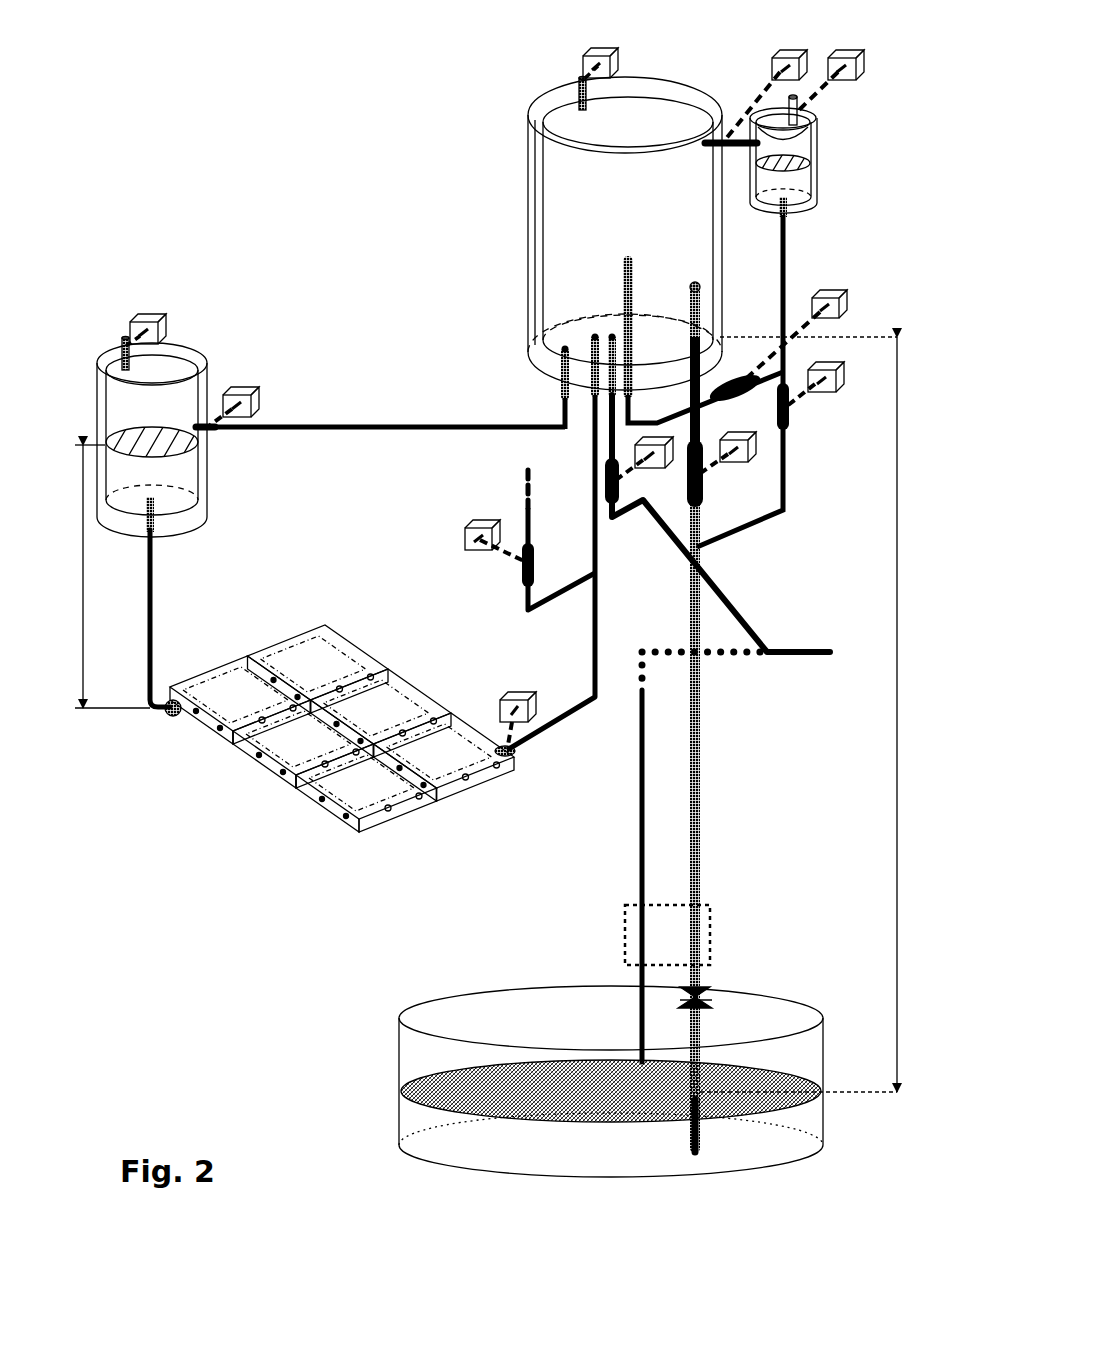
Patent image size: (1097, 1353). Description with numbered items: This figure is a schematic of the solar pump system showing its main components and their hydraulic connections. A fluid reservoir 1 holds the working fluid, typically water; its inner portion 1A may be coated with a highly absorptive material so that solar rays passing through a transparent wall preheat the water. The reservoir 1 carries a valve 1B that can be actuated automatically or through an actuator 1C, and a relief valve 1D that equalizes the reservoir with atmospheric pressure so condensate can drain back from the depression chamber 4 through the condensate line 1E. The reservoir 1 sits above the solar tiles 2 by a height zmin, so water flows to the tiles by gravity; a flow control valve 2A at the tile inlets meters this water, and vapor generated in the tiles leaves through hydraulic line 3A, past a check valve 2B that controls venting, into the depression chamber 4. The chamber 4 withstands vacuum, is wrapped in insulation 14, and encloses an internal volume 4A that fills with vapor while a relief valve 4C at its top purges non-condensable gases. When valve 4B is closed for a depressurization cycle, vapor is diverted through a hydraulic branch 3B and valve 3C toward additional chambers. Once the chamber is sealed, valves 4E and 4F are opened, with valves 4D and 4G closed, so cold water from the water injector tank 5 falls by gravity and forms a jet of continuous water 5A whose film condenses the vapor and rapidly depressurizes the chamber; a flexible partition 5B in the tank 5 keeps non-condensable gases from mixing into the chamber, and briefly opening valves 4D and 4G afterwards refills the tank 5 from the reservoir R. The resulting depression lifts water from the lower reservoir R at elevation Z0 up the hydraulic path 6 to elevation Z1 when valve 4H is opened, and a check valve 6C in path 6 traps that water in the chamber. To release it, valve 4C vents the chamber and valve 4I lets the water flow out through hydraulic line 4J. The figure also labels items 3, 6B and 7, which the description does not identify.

The fluid reservoir 1 is at (205, 497).
The inner portion of the reservoir 1A is at (203, 472).
The valve 1B is at (208, 423).
The actuator 1C is at (257, 395).
The relief valve 1D is at (128, 335).
The condensate line 1E is at (378, 423).
The solar tiles 2 is at (385, 708).
The flow control valve 2A is at (173, 715).
The check valve 2B is at (510, 758).
The sensor 3 is at (512, 700).
The hydraulic line 3A is at (595, 660).
The hydraulic branch 3B is at (532, 495).
The valve 3C is at (468, 530).
The depression chamber 4 is at (528, 192).
The internal volume 4A is at (543, 275).
The valve 4B is at (597, 338).
The relief valve 4C is at (578, 82).
The valve 4D is at (772, 70).
The valve 4E is at (856, 80).
The valve 4F is at (840, 296).
The valve 4G is at (838, 392).
The valve 4H is at (752, 455).
The valve 4I is at (653, 470).
The hydraulic line 4J is at (797, 660).
The water injector tank 5 is at (817, 180).
The jet of continuous water 5A is at (628, 258).
The flexible partition 5B is at (805, 138).
The hydraulic path 6 is at (703, 745).
The tube top end 6B is at (700, 290).
The check valve 6C is at (705, 995).
The pump 7 is at (712, 920).
The insulation 14 is at (537, 225).
The reservoir R is at (545, 1025).
The elevation Z1 is at (824, 698).
The elevation Z0 is at (810, 1112).
The elevation difference zmin is at (112, 576).